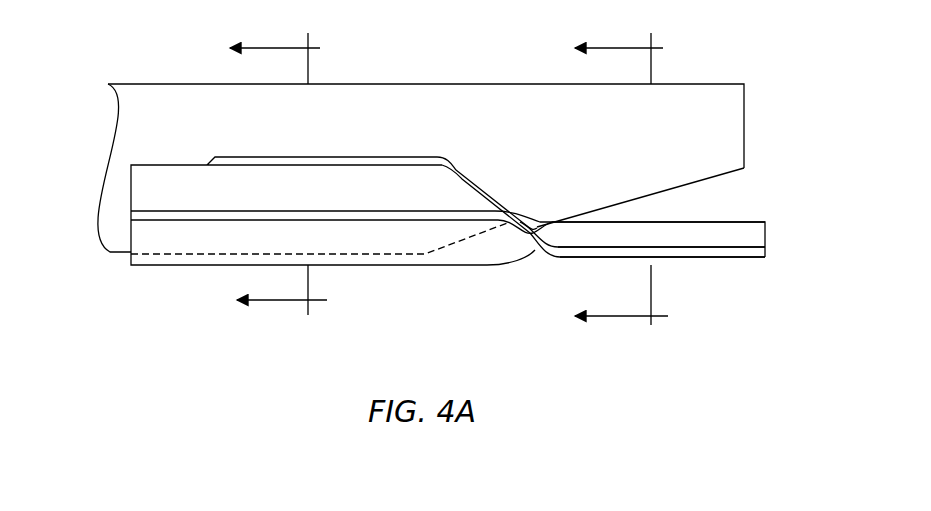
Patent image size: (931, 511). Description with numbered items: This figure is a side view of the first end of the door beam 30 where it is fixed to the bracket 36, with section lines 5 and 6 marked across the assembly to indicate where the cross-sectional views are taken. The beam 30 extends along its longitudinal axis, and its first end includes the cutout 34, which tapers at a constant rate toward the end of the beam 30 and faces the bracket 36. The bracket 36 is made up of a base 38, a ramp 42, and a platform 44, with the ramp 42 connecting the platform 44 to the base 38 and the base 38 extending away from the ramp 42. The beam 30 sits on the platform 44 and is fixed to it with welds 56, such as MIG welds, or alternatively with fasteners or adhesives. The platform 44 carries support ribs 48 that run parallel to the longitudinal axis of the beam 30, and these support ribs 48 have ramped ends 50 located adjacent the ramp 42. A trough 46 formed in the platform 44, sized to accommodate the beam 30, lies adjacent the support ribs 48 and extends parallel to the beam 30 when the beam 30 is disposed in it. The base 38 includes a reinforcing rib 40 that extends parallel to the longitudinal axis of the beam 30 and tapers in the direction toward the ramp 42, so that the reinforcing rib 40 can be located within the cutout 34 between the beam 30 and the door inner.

The beam 30 is at (137, 81).
The cutout 34 is at (738, 191).
The bracket 36 is at (467, 81).
The base 38 is at (681, 240).
The reinforcing rib 40 is at (749, 221).
The ramp 42 is at (538, 226).
The platform 44 is at (271, 207).
The trough 46 is at (386, 269).
The support ribs 48 is at (176, 163).
The ramped ends 50 is at (498, 181).
The welds 56 is at (368, 156).
The section line 5- 5 is at (278, 177).
The section line 6- 6 is at (621, 185).